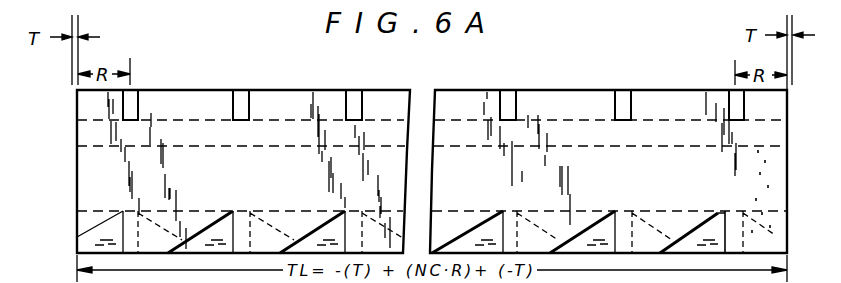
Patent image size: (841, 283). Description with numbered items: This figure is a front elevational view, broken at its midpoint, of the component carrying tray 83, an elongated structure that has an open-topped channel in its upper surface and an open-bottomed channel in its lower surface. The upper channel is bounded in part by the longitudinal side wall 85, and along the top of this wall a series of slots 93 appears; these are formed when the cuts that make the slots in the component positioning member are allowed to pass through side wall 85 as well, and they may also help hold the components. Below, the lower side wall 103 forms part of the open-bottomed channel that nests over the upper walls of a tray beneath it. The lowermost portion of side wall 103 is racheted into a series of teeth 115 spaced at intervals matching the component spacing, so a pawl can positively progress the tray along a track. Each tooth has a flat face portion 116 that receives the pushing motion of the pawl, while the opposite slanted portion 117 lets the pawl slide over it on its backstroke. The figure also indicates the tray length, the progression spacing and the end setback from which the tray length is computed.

The component carrying tray 83 is at (75, 178).
The longitudinal side wall 85 is at (77, 103).
The slots 93 is at (731, 90).
The lower side wall 103 is at (80, 218).
The teeth 115 is at (564, 254).
The flat face portion 116 is at (721, 214).
The slanted portion 117 is at (672, 247).